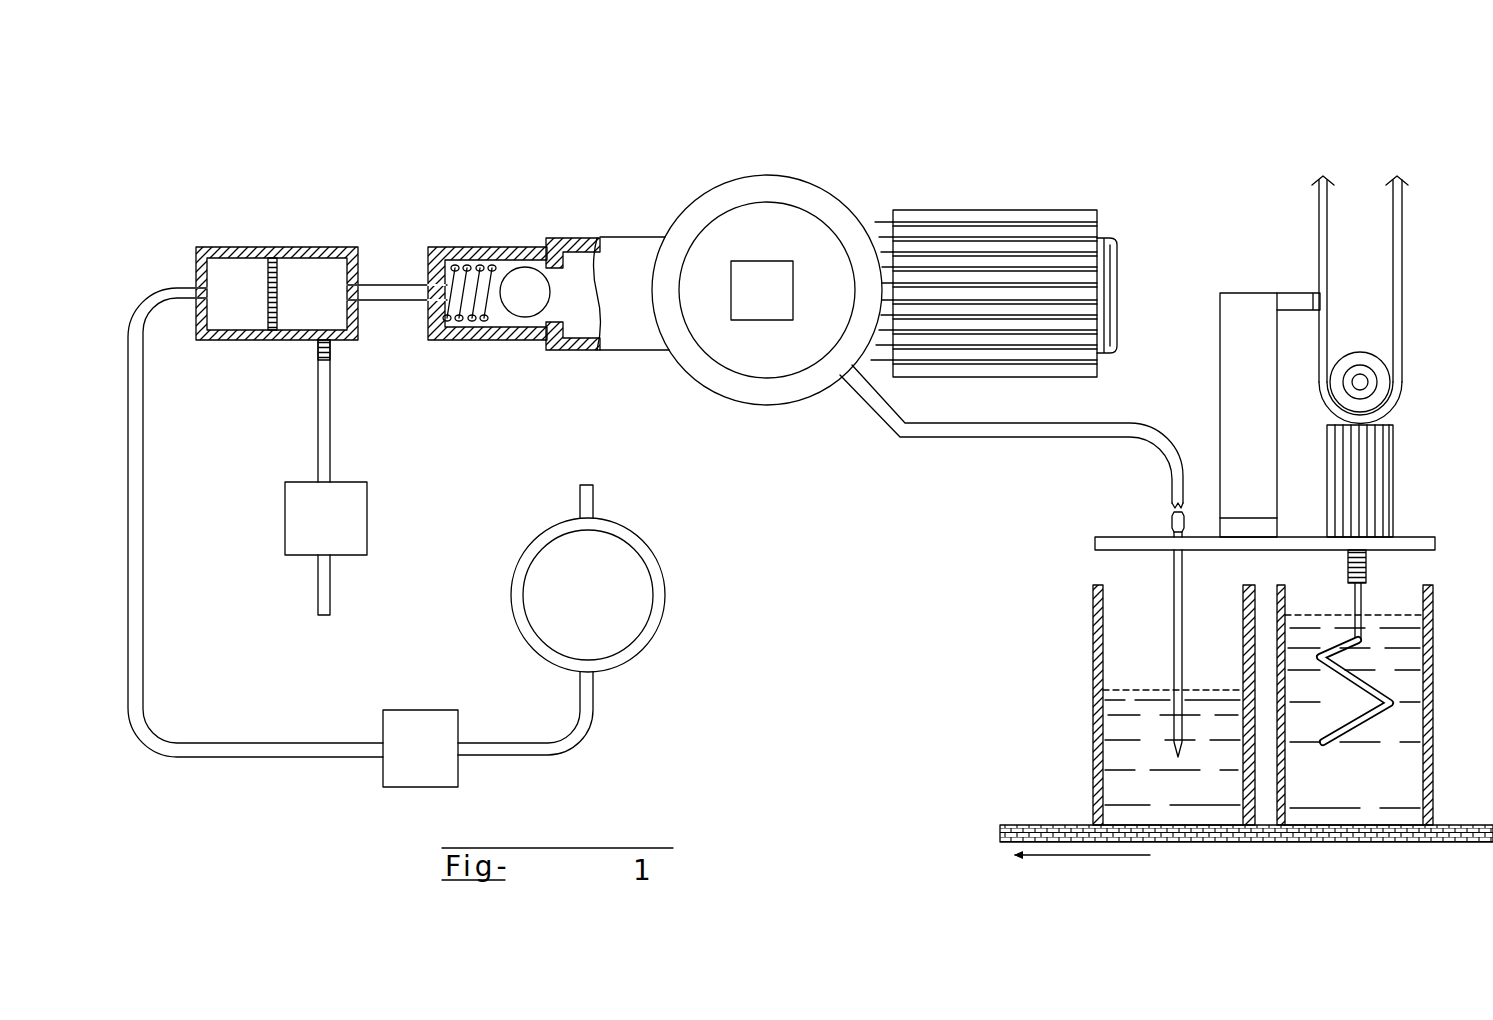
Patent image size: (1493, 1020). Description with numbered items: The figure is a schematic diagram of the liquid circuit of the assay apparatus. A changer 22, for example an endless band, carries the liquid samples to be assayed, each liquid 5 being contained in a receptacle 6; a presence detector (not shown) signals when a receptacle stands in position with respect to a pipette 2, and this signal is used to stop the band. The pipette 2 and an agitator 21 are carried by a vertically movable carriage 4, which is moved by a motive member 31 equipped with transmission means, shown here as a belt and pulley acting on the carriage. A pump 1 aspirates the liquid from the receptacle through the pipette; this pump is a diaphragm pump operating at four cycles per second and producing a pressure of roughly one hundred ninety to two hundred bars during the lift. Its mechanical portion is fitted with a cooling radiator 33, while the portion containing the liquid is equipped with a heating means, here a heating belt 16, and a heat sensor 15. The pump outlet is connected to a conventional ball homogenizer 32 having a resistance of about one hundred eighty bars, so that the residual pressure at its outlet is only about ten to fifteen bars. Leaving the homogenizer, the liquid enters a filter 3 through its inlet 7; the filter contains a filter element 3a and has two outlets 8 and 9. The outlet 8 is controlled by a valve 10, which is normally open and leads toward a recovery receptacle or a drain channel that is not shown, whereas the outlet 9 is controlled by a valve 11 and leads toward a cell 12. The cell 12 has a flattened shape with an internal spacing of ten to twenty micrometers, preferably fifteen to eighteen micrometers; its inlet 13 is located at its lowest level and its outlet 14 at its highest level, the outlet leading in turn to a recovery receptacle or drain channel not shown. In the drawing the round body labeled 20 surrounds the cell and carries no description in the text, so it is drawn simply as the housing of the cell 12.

The pump 1 is at (620, 262).
The pipette 2 is at (1174, 582).
The filter 3 is at (302, 243).
The filter element 3a is at (268, 275).
The vertically movable carriage 4 is at (1122, 545).
The liquid 5 is at (1120, 712).
The receptacle 6 is at (1093, 640).
The inlet 7 is at (380, 288).
The outlet 8 is at (318, 345).
The outlet 9 is at (196, 290).
The valve 10 is at (302, 498).
The valve 11 is at (415, 725).
The cell 12 is at (636, 590).
The inlet 13 is at (595, 675).
The outlet 14 is at (598, 514).
The heat sensor 15 is at (762, 292).
The heating belt 16 is at (712, 200).
The gauge housing 20 is at (538, 538).
The agitator 21 is at (1395, 705).
The changer 22 is at (1045, 826).
The motive member 31 is at (1402, 413).
The ball homogenizer 32 is at (472, 250).
The cooling radiator 33 is at (1050, 210).